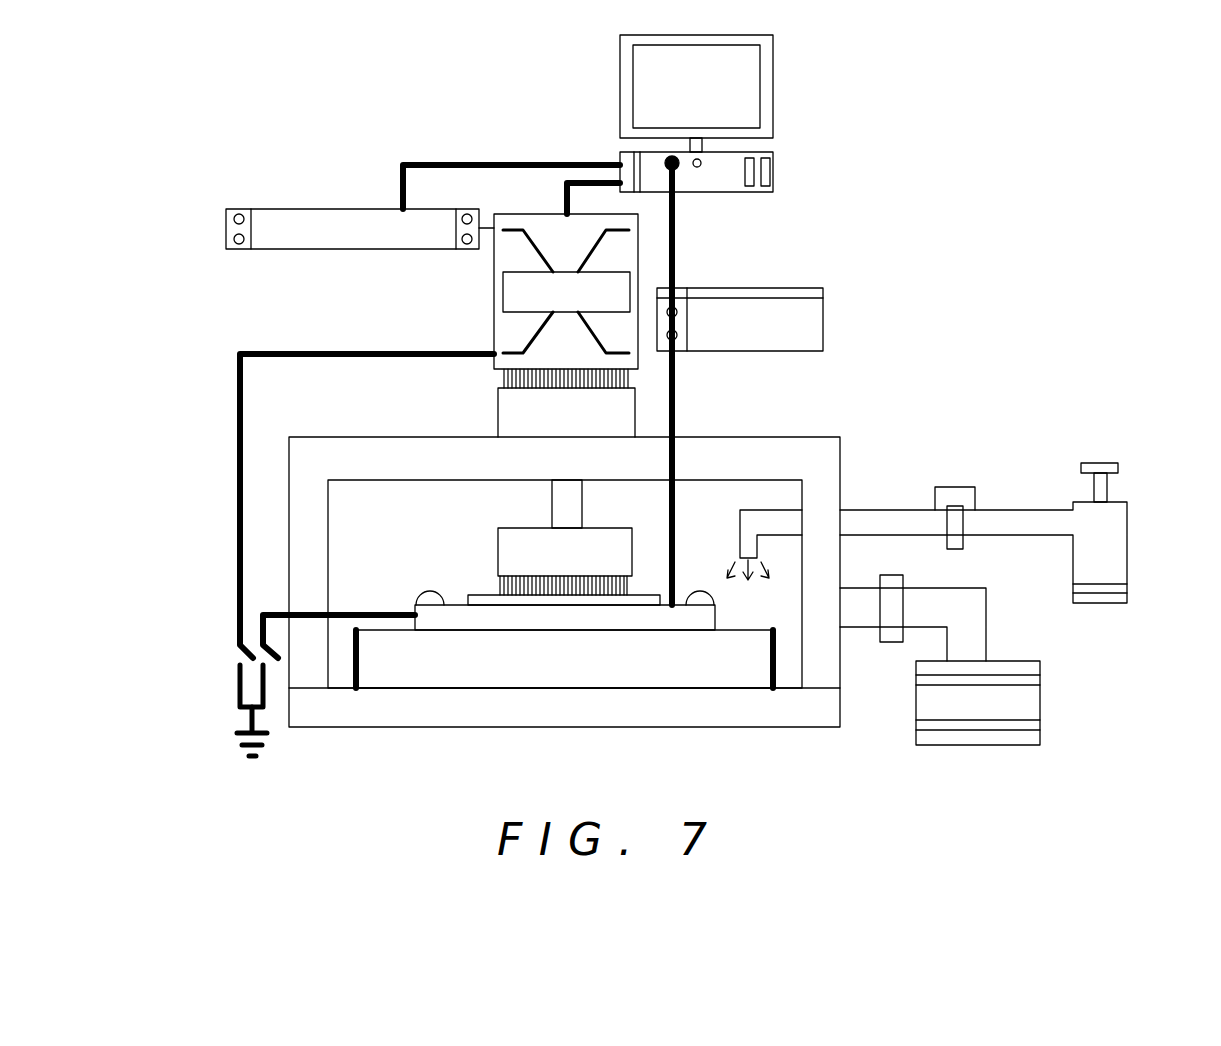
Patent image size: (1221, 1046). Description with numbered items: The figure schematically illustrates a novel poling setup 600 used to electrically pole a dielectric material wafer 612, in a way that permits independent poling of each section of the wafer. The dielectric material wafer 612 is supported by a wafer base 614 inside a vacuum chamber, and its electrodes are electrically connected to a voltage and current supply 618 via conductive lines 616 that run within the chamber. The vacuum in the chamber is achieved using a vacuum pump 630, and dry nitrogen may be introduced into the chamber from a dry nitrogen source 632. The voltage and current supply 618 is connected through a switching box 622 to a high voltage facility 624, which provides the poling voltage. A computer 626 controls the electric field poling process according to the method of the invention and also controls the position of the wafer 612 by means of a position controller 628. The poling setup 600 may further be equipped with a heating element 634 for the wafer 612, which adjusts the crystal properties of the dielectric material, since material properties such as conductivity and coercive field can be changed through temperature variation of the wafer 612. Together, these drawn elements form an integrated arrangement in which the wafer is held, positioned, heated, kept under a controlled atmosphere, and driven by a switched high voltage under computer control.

The poling setup 600 is at (205, 365).
The dielectric material wafer 612 is at (464, 584).
The wafer base 614 is at (450, 620).
The conductive lines 616 is at (498, 588).
The voltage and current supply 618 is at (556, 538).
The switching box 622 is at (503, 293).
The high voltage facility 624 is at (268, 210).
The computer 626 is at (776, 84).
The position controller 628 is at (825, 320).
The vacuum pump 630 is at (1042, 700).
The dry nitrogen source 632 is at (1128, 530).
The heating element 634 is at (705, 668).